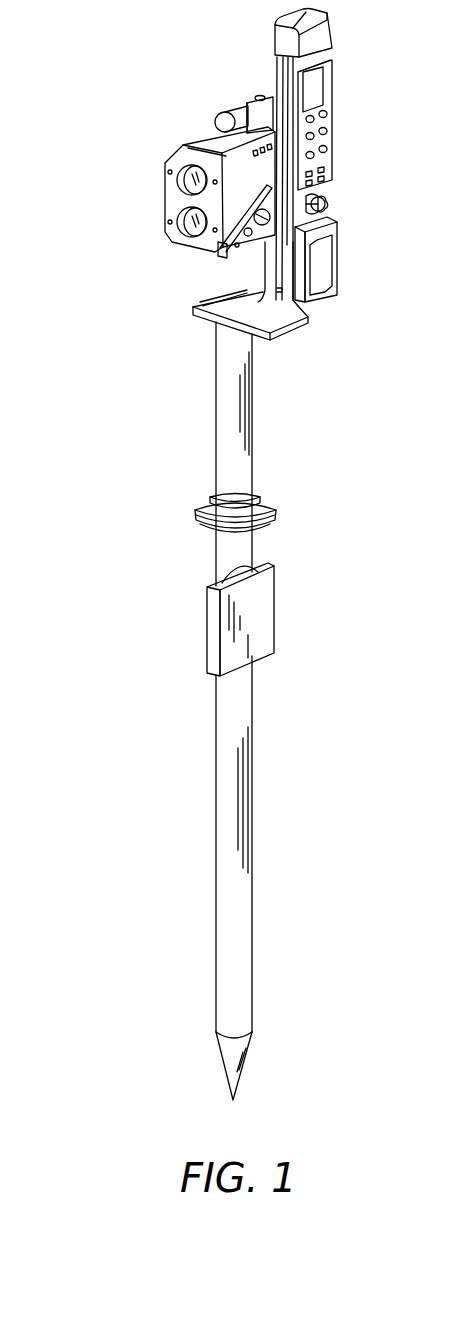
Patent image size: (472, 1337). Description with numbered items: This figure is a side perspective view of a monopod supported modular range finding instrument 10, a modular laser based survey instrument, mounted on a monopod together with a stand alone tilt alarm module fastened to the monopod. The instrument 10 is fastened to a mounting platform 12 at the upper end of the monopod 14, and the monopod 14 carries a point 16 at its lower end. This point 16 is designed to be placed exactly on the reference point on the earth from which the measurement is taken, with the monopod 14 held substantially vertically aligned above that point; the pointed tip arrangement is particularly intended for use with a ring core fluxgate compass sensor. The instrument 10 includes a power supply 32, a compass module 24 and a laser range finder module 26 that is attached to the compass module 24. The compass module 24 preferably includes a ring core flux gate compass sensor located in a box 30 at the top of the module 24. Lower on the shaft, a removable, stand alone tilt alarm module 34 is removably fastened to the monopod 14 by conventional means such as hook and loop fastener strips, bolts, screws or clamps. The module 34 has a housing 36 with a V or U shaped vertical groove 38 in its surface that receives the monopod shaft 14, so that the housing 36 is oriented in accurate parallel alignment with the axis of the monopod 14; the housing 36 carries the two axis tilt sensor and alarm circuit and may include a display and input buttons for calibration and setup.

The monopod supported modular range finding instrument 10 is at (92, 272).
The mounting platform 12 is at (205, 317).
The monopod 14 is at (216, 992).
The point 16 is at (231, 1099).
The compass module 24 is at (330, 165).
The laser range finder module 26 is at (205, 150).
The box 30 is at (325, 32).
The power supply 32 is at (323, 282).
The tilt alarm module 34 is at (276, 633).
The housing 36 is at (265, 595).
The vertical groove 38 is at (225, 569).